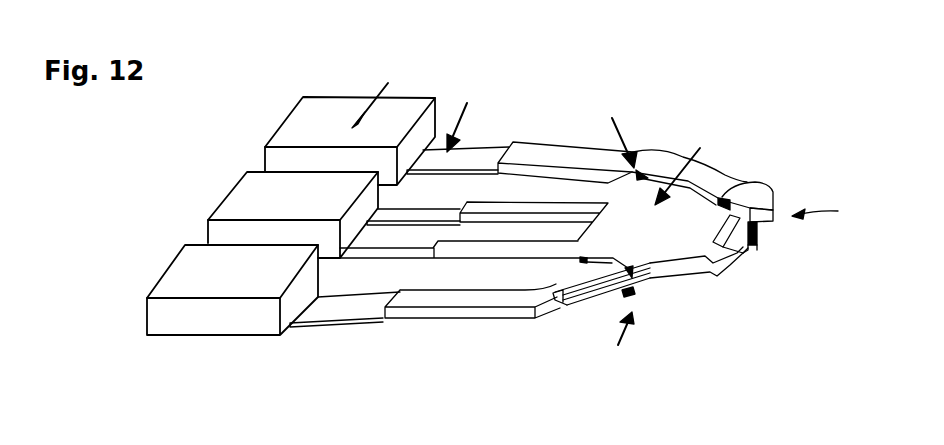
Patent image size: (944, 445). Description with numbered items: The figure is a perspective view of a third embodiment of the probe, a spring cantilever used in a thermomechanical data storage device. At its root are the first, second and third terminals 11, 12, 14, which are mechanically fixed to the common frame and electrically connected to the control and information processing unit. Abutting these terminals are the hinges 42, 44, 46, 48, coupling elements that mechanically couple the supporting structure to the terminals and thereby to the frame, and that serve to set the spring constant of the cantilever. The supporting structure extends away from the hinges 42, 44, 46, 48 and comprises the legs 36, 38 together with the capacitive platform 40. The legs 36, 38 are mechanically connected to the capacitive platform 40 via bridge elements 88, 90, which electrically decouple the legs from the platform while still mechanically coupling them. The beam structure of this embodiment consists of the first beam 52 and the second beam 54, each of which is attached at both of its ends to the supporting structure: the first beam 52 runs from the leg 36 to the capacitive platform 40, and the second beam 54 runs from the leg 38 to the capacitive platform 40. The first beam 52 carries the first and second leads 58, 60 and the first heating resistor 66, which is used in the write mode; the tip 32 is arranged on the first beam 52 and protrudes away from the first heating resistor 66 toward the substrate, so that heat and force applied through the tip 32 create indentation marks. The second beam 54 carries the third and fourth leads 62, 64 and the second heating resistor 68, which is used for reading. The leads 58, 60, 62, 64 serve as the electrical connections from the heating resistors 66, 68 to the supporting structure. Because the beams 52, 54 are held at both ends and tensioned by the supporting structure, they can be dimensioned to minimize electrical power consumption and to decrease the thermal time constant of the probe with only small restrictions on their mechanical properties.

The first terminal 11 is at (190, 273).
The second terminal 12 is at (243, 200).
The third terminal 14 is at (307, 113).
The tip 32 is at (762, 232).
The leg 36 is at (558, 152).
The leg 38 is at (450, 298).
The capacitive platform 40 is at (683, 217).
The hinge 42 is at (477, 152).
The hinge 44 is at (415, 228).
The hinge 46 is at (395, 253).
The hinge 48 is at (343, 315).
The first beam 52 is at (829, 218).
The second beam 54 is at (618, 342).
The first lead 58 is at (745, 262).
The second lead 60 is at (774, 213).
The third lead 62 is at (705, 282).
The fourth lead 64 is at (590, 312).
The first heating resistor 66 is at (748, 252).
The second heating resistor 68 is at (637, 297).
The bridge element 88 is at (757, 179).
The bridge element 90 is at (640, 165).